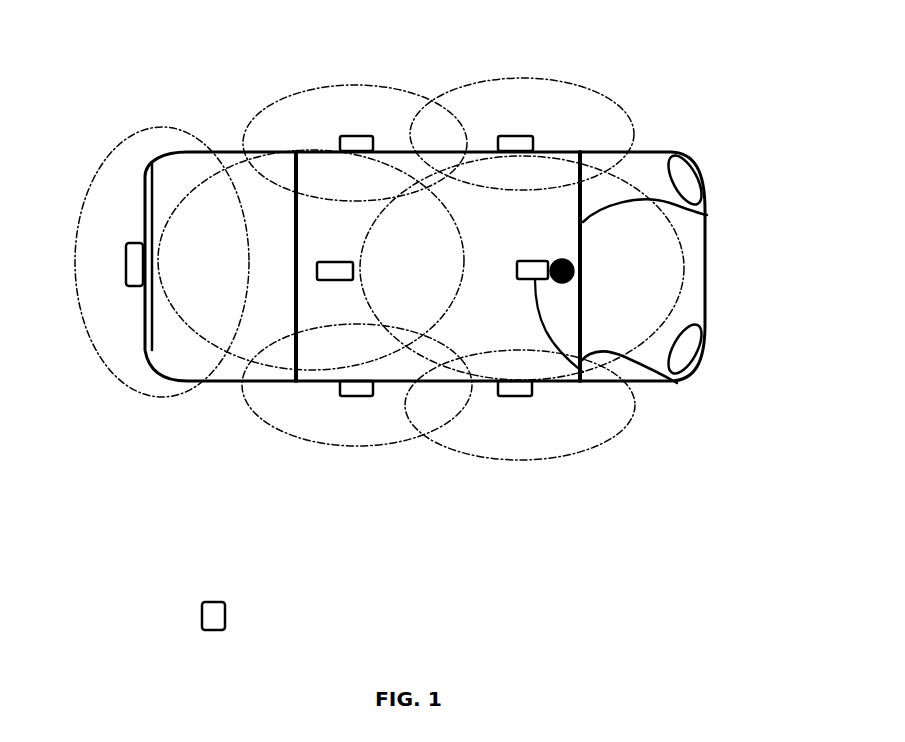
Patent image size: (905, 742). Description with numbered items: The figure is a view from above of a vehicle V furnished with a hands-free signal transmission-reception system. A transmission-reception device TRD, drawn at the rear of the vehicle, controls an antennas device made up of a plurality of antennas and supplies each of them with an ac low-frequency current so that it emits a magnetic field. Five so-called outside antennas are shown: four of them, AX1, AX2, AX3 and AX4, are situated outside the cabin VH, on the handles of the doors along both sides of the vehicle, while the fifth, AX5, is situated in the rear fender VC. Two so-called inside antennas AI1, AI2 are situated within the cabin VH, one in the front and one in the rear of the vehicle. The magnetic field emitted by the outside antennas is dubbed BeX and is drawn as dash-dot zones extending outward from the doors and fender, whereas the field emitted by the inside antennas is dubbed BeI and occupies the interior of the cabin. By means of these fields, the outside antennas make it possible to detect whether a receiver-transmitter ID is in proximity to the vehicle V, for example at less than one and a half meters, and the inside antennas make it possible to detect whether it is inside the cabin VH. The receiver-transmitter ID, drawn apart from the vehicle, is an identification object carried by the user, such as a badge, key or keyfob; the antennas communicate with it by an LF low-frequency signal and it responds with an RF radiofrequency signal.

The vehicle V is at (703, 118).
The rear fender VC is at (147, 350).
The cabin VH is at (707, 215).
The transmission-reception device TRD is at (677, 383).
The magnetic field of the outside antennas BeX is at (283, 103).
The magnetic field of the inside antennas BeI is at (683, 269).
The outside antenna AX1 is at (357, 396).
The outside antenna AX2 is at (516, 396).
The outside antenna AX3 is at (515, 135).
The outside antenna AX4 is at (357, 135).
The outside antenna AX5 is at (127, 263).
The inside antenna AI1 is at (560, 283).
The inside antenna AI2 is at (317, 271).
The receiver-transmitter ID is at (214, 630).